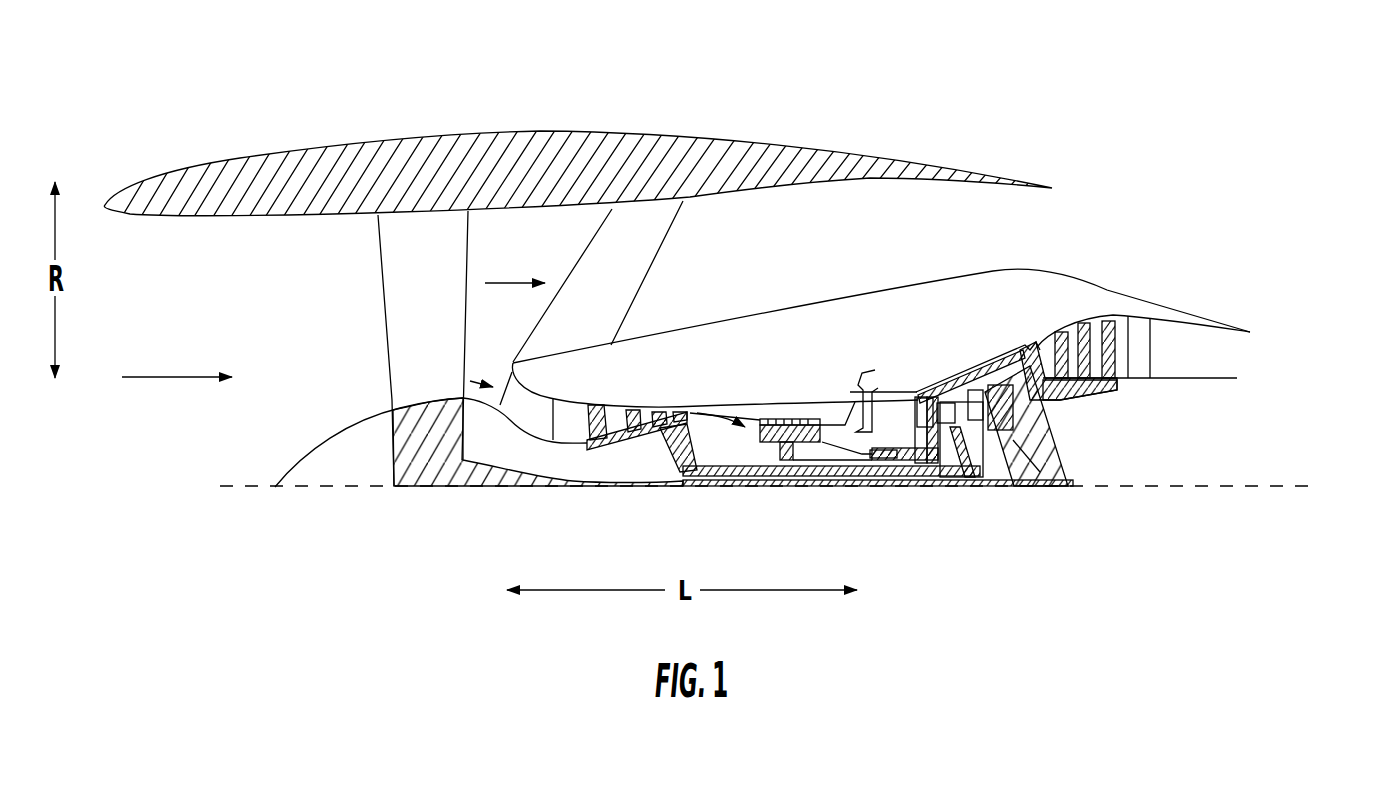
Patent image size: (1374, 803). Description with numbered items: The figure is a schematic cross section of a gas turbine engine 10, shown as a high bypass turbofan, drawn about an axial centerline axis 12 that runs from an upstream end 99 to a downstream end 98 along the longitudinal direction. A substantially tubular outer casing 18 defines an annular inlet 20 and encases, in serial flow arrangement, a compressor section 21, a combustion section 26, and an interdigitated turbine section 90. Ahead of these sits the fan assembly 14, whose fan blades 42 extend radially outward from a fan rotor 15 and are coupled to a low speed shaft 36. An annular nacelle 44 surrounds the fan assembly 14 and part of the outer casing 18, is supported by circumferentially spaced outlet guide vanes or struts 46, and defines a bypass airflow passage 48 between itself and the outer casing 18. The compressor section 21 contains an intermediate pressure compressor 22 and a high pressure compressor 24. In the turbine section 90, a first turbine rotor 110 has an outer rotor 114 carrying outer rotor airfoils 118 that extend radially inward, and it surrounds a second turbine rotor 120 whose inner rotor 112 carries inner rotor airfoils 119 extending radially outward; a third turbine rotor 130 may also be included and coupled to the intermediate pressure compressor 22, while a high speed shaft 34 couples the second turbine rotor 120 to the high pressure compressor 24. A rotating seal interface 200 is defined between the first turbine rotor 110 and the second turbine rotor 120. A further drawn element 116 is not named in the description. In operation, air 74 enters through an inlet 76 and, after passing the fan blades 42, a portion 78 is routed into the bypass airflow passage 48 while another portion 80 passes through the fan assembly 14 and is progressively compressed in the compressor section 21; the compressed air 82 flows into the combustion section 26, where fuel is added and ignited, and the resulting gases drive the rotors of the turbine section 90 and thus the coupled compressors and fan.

The gas turbine engine 10 is at (1135, 90).
The axial centerline axis 12 is at (1263, 484).
The fan assembly 14 is at (318, 316).
The fan rotor 15 is at (331, 392).
The outer casing 18 is at (791, 337).
The annular inlet 20 is at (503, 372).
The compressor section 21 is at (688, 379).
The intermediate pressure compressor 22 is at (596, 405).
The high pressure compressor 24 is at (768, 418).
The combustion section 26 is at (880, 334).
The high speed shaft 34 is at (750, 505).
The low speed shaft 36 is at (463, 511).
The fan blades 42 is at (350, 247).
The nacelle 44 is at (293, 103).
The outlet guide vanes or struts 46 is at (589, 293).
The bypass airflow passage 48 is at (708, 270).
The air 74 is at (190, 377).
The inlet 76 is at (223, 300).
The bypass air 78 is at (508, 283).
The core air 80 is at (473, 392).
The compressed air 82 is at (706, 412).
The turbine section 90 is at (1060, 284).
The downstream end 98 is at (1341, 394).
The upstream end 99 is at (76, 466).
The first turbine rotor 110 is at (1032, 452).
The inner rotor 112 is at (1037, 472).
The outer rotor 114 is at (994, 304).
The turbine vanes 116 is at (1043, 322).
The outer rotor airfoils 118 is at (900, 507).
The inner rotor airfoils 119 is at (940, 403).
The second turbine rotor 120 is at (924, 397).
The third turbine rotor 130 is at (961, 508).
The rotating seal interface 200 is at (947, 445).